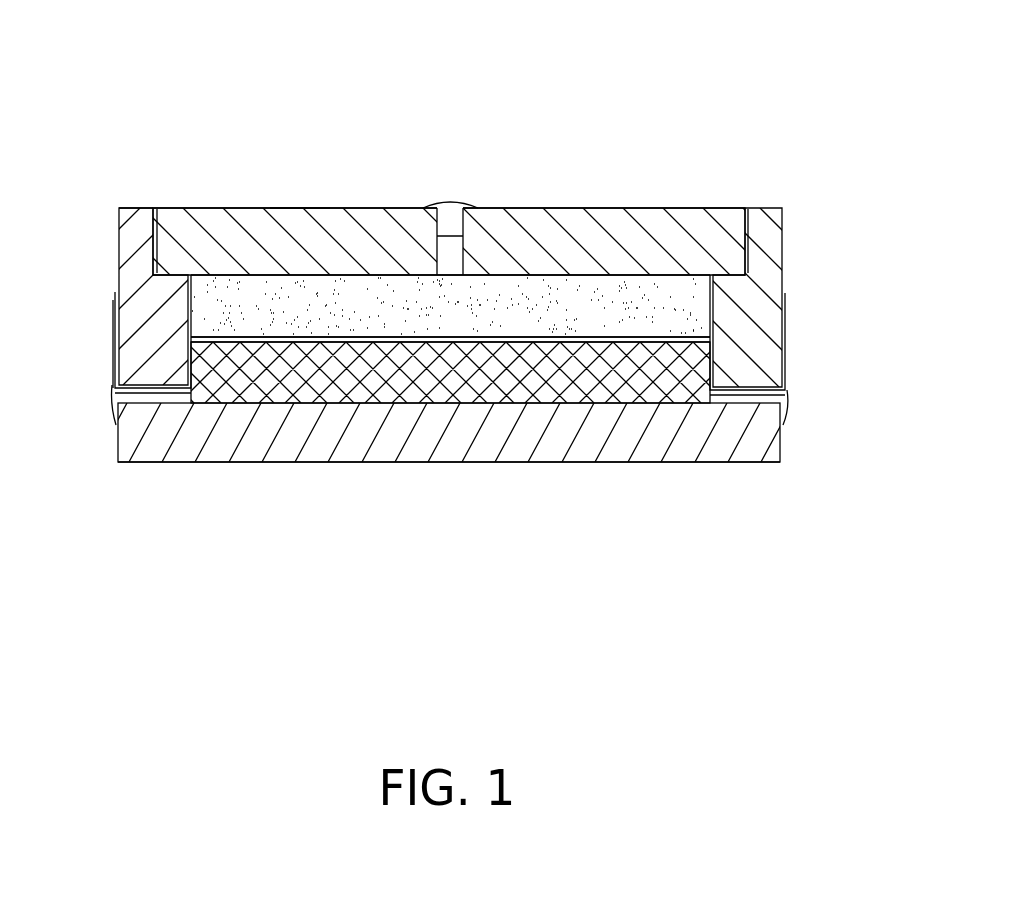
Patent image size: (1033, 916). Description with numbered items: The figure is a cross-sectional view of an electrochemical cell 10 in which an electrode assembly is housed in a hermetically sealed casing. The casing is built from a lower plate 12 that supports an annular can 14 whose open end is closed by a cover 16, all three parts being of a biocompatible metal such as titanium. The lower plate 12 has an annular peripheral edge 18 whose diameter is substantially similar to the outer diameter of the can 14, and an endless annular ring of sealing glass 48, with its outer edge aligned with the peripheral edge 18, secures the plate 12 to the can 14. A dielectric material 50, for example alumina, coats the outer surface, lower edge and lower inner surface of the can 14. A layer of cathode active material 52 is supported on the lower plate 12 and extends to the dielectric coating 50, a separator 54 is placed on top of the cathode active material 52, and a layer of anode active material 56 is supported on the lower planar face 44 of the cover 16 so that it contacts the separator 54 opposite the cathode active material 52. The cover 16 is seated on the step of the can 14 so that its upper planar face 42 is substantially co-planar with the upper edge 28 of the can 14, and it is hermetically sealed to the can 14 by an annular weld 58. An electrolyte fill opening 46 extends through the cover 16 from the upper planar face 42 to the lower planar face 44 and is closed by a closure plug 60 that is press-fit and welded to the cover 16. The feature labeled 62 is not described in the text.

The electrochemical cell 10 is at (768, 98).
The lower plate 12 is at (647, 442).
The annular can 14 is at (768, 253).
The cover 16 is at (240, 220).
The annular peripheral edge 18 is at (782, 452).
The upper edge 28 is at (139, 208).
The upper planar face 42 is at (297, 208).
The lower planar face 44 is at (378, 278).
The electrolyte fill opening 46 is at (470, 258).
The sealing glass 48 is at (768, 398).
The dielectric material 50 is at (187, 312).
The cathode active material 52 is at (507, 383).
The separator 54 is at (667, 335).
The anode active material 56 is at (579, 313).
The annular weld 58 is at (158, 208).
The closure plug 60 is at (450, 206).
The outer liner 62 is at (115, 358).